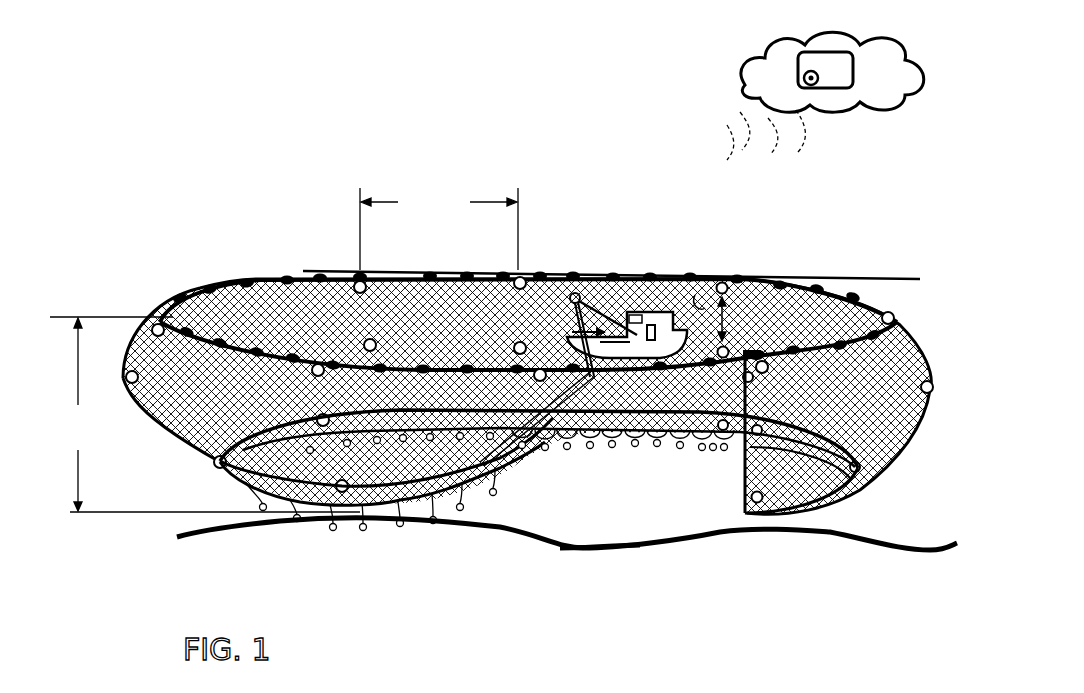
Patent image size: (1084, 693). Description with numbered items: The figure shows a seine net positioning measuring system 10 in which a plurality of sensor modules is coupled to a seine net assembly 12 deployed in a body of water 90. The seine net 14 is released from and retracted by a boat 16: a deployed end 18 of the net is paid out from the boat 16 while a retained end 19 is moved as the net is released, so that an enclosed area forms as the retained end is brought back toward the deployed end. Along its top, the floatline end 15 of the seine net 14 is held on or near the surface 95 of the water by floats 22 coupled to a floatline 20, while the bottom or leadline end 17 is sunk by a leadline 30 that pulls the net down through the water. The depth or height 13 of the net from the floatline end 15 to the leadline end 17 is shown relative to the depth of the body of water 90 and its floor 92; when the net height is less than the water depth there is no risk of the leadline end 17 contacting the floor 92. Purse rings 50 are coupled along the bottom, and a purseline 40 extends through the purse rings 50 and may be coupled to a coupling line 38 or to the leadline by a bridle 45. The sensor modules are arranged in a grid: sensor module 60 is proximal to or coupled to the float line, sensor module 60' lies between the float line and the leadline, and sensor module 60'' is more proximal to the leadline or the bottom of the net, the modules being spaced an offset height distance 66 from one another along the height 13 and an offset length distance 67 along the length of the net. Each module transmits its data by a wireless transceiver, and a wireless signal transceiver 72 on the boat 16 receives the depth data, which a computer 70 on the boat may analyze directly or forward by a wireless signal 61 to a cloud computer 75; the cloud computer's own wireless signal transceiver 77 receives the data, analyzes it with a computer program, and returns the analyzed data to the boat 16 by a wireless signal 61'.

The seine net positioning measuring system 10 is at (122, 284).
The seine net assembly 12 is at (263, 297).
The depth or height 13 is at (205, 414).
The seine net 14 is at (297, 300).
The floatline end 15 is at (333, 270).
The boat 16 is at (600, 290).
The leadline end 17 is at (478, 519).
The deployed end 18 is at (747, 513).
The retained end 19 is at (618, 445).
The floatline 20 is at (210, 290).
The floats 22 is at (182, 298).
The leadline 30 is at (307, 533).
The coupling line 38 is at (520, 478).
The purseline 40 is at (420, 530).
The bridle 45 is at (377, 537).
The purse rings 50 is at (397, 540).
The sensor module 60 is at (707, 258).
The sensor module 60' is at (746, 269).
The sensor module 60'' is at (723, 478).
The wireless signal 61 is at (816, 148).
The wireless signal 61' is at (657, 137).
The offset height distance 66 is at (695, 295).
The offset length distance 67 is at (439, 229).
The computer 70 is at (645, 300).
The wireless signal transceiver 72 is at (650, 308).
The cloud computer 75 is at (745, 62).
The wireless signal transceiver 77 is at (805, 62).
The body of water 90 is at (935, 509).
The floor 92 is at (623, 547).
The surface 95 is at (893, 272).